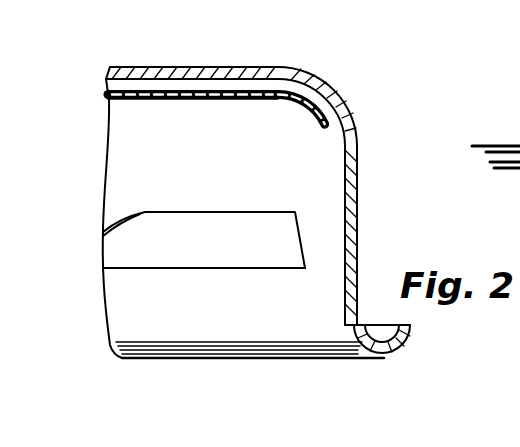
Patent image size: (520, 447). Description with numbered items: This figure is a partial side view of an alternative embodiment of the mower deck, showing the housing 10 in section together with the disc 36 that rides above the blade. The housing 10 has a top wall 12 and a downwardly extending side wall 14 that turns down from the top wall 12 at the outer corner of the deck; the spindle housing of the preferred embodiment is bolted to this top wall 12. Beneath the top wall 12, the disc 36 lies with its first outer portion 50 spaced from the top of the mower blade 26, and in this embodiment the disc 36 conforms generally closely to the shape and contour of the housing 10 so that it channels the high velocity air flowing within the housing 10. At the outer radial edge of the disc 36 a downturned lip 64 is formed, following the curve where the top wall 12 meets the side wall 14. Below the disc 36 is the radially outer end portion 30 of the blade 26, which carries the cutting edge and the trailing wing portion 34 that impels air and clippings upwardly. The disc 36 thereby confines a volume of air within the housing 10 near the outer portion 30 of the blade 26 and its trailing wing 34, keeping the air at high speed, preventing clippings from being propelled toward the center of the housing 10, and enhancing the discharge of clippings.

The housing 10 is at (357, 220).
The top wall 12 is at (291, 71).
The side walls 14 is at (357, 142).
The mower blade 26 is at (243, 271).
The radially outer end portion 30 is at (153, 270).
The trailing wing portion 34 is at (142, 218).
The disc 36 is at (180, 101).
The first outer portion 50 is at (223, 100).
The lip 64 is at (295, 101).